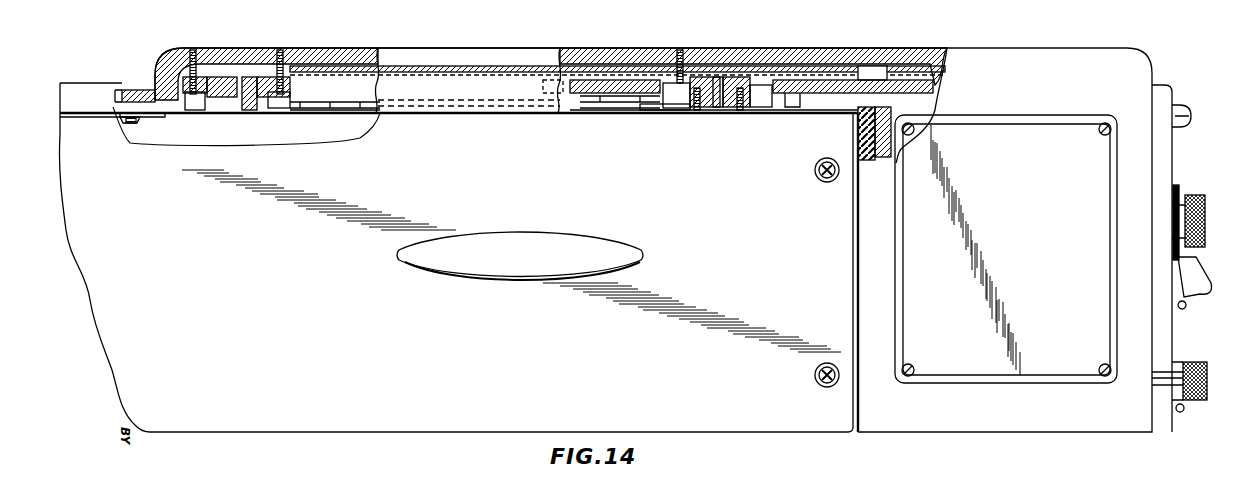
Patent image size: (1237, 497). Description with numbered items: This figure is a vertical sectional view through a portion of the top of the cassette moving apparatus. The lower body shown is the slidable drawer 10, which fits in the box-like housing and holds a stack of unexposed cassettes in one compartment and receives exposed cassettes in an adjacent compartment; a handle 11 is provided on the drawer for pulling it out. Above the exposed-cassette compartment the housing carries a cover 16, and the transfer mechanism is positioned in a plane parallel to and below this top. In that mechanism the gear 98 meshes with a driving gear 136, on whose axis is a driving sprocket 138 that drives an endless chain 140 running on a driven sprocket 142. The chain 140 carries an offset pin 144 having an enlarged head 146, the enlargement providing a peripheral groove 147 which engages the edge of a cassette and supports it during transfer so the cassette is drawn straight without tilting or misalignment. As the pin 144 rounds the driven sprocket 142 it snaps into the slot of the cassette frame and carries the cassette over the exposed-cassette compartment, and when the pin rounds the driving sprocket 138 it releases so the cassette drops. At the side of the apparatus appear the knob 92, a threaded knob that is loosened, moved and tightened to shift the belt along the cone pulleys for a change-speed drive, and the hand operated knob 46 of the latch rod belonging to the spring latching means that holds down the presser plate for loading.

The slidable drawer 10 is at (384, 423).
The handle 11 is at (599, 243).
The cover 16 is at (641, 55).
The hand operated knob 46 is at (1202, 406).
The knob 92 is at (1197, 194).
The gear 98 is at (917, 88).
The driving gear 136 is at (837, 88).
The driving sprocket 138 is at (662, 112).
The endless chain 140 is at (337, 110).
The driven sprocket 142 is at (228, 105).
The offset pin 144 is at (121, 92).
The enlarged head 146 is at (143, 117).
The peripheral groove 147 is at (127, 116).